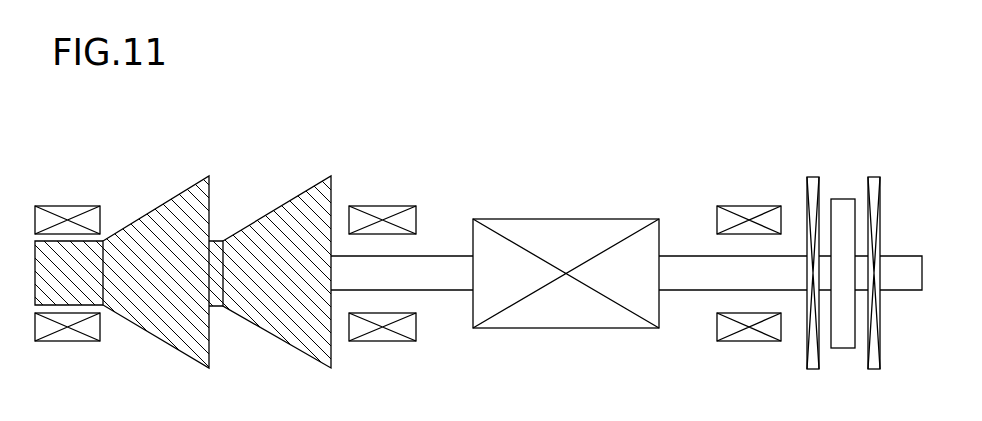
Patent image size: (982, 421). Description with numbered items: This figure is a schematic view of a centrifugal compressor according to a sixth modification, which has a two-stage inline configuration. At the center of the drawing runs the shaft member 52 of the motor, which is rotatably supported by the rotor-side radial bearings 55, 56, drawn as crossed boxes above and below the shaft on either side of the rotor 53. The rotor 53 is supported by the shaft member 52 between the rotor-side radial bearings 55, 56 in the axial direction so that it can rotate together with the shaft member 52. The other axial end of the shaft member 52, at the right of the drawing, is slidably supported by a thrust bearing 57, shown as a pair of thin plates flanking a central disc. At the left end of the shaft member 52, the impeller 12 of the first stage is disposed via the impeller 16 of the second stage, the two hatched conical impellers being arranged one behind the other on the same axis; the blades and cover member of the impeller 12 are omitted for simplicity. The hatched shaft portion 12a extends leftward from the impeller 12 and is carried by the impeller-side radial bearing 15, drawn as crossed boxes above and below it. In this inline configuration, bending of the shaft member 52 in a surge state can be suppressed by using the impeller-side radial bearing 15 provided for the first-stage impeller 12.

The shaft portion of rotor 12a is at (48, 270).
The impeller-side radial bearing 15 is at (94, 204).
The impeller 12 is at (165, 203).
The impeller of the second stage 16 is at (287, 202).
The rotor-side radial bearing 55 is at (385, 205).
The rotor 53 is at (575, 218).
The shaft member 52 is at (685, 255).
The rotor-side radial bearing 56 is at (750, 204).
The thrust bearing 57 is at (885, 172).